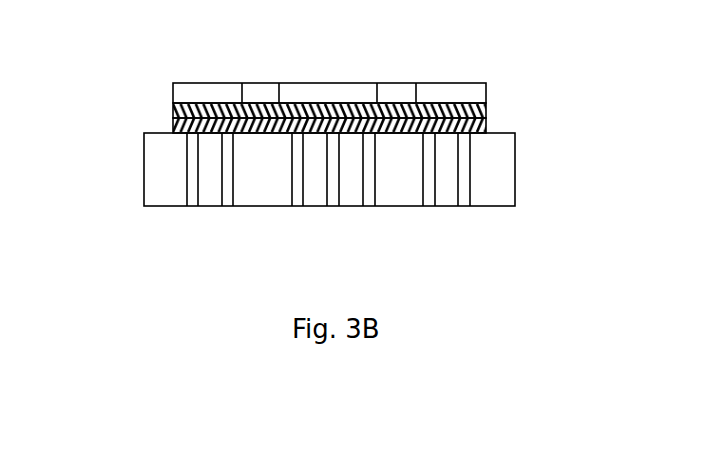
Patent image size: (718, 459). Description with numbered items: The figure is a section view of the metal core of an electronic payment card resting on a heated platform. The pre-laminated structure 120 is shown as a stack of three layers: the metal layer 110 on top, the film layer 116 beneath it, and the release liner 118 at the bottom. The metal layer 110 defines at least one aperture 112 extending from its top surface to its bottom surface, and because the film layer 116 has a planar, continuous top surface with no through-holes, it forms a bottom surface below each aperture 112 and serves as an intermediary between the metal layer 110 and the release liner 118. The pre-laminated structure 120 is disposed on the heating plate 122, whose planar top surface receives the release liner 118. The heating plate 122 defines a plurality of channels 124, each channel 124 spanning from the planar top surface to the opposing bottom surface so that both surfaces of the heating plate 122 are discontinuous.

The metal layer 110 is at (194, 83).
The aperture 112 is at (257, 90).
The film layer 116 is at (487, 110).
The release liner 118 is at (173, 128).
The pre-laminated structure 120 is at (375, 73).
The heating plate 122 is at (145, 177).
The channel 124 is at (227, 206).